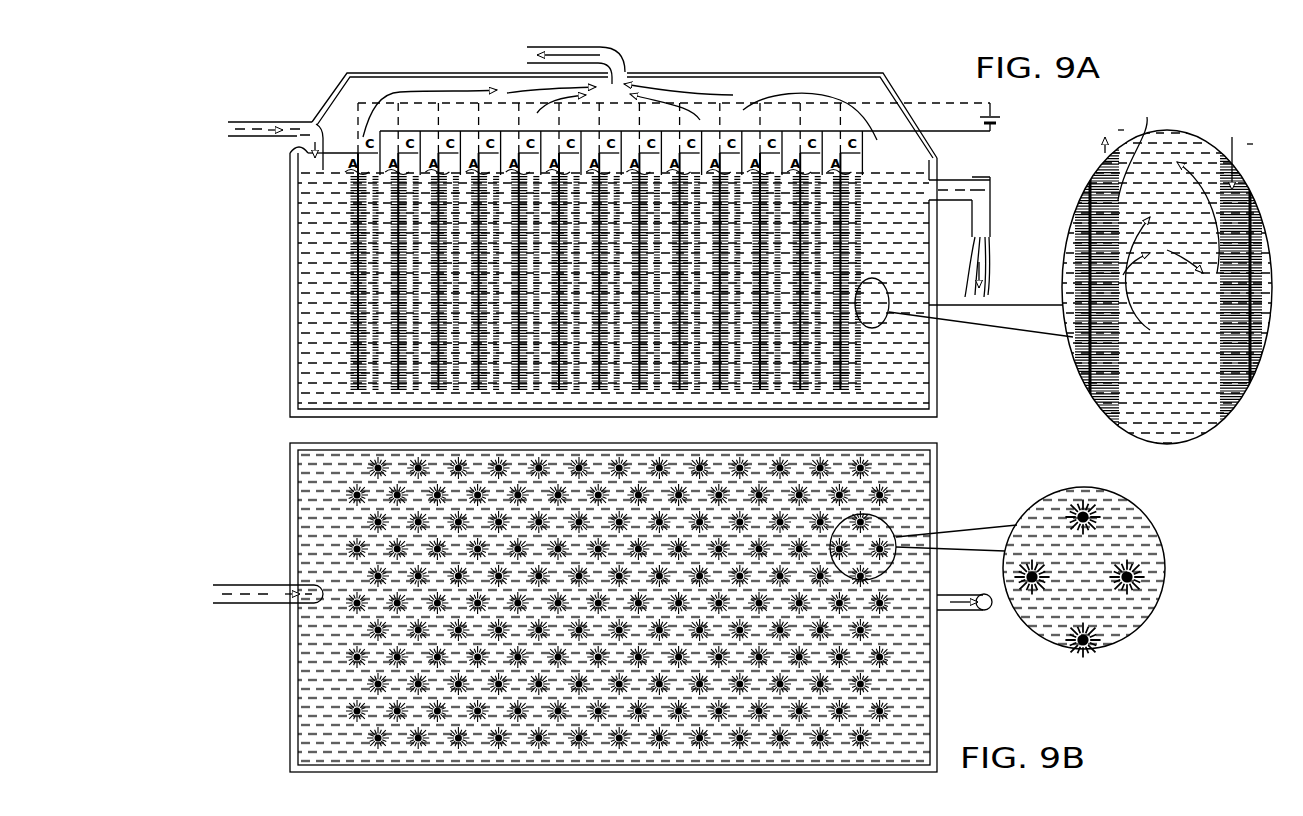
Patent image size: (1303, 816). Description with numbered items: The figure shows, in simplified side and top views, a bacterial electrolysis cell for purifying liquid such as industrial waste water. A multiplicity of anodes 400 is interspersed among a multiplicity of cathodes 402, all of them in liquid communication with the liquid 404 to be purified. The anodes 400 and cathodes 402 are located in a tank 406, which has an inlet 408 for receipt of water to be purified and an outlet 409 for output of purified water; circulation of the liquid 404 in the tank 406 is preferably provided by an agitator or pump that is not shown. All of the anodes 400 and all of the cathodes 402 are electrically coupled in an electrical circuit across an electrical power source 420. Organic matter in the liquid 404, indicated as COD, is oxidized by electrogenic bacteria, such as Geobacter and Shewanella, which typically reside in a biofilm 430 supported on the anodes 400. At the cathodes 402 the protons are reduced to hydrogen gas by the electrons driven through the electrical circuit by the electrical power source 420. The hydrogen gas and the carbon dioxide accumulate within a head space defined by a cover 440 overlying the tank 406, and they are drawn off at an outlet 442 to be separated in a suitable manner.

In FIG. 9A, the anodes 400 is at (355, 196).
In FIG. 9B, the anodes 400 is at (1087, 515).
In FIG. 9A, the cathodes 402 is at (358, 213).
In FIG. 9B, the cathodes 402 is at (1130, 580).
In FIG. 9A, the liquid 404 is at (912, 340).
In FIG. 9B, the liquid 404 is at (913, 477).
In FIG. 9A, the tank 406 is at (932, 398).
In FIG. 9B, the tank 406 is at (940, 712).
In FIG. 9A, the inlet 408 is at (262, 123).
In FIG. 9B, the inlet 408 is at (262, 586).
In FIG. 9A, the outlet 409 is at (990, 190).
In FIG. 9B, the outlet 409 is at (952, 610).
In FIG. 9A, the electrical power source 420 is at (998, 120).
In FIG. 9A, the biofilm 430 is at (1179, 213).
In FIG. 9A, the cover 440 is at (884, 84).
In FIG. 9A, the outlet 442 is at (620, 53).